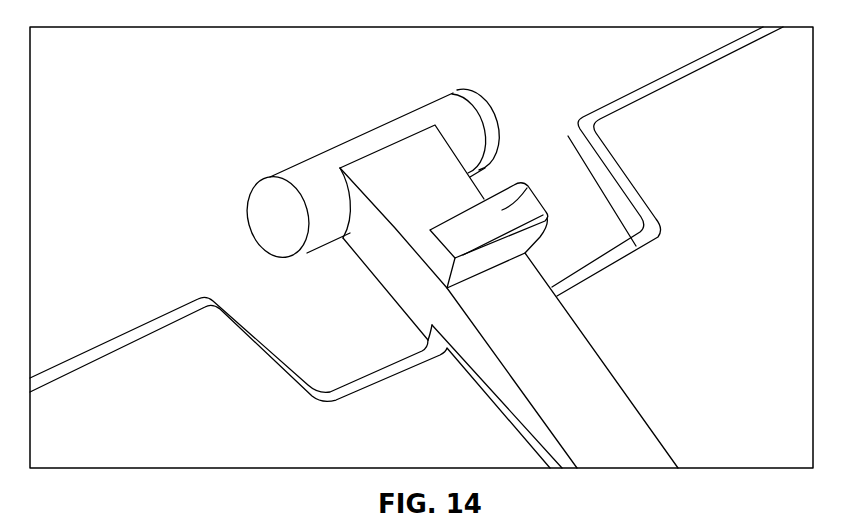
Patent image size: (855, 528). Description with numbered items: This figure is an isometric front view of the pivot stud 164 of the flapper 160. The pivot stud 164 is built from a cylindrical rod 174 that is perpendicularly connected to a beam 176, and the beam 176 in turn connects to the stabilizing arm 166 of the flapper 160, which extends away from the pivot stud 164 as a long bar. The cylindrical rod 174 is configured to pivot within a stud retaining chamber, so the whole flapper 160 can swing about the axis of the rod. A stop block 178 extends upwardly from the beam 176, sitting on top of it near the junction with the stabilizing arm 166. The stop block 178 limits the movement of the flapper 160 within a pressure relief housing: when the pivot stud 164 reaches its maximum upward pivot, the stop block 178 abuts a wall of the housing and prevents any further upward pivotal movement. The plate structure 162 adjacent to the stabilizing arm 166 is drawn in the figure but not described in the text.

The flapper 160 is at (371, 161).
The first panel 162 is at (197, 338).
The pivot stud 164 is at (327, 183).
The stabilizing arm 166 is at (593, 397).
The cylindrical rod 174 is at (270, 177).
The beam 176 is at (430, 182).
The stop block 178 is at (529, 184).